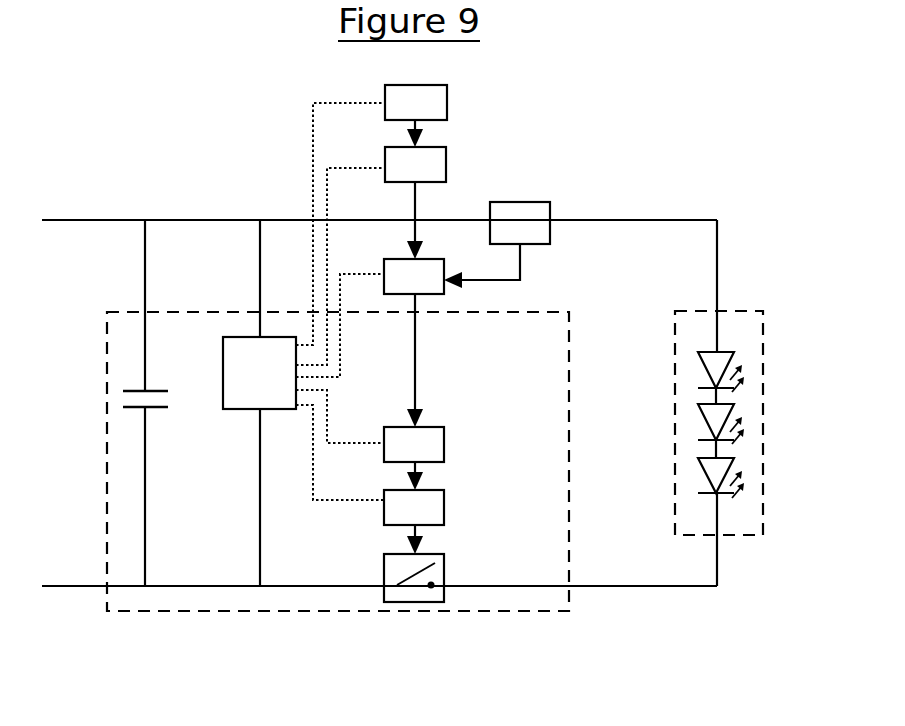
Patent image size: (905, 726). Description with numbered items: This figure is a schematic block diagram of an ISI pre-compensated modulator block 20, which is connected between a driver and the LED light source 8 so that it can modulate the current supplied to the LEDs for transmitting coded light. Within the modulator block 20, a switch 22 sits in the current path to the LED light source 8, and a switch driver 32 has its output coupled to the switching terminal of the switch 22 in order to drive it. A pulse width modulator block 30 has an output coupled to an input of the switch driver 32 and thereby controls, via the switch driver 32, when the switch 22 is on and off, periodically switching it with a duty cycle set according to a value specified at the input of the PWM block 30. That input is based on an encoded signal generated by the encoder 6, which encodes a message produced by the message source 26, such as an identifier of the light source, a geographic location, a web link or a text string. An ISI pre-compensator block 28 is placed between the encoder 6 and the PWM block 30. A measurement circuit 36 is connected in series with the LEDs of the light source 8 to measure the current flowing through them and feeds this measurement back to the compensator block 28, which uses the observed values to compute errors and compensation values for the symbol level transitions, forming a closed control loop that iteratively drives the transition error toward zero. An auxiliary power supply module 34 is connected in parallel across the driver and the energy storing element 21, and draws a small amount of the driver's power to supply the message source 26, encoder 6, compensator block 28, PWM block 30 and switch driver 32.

The encoder 6 is at (415, 164).
The LED light source 8 is at (740, 310).
The ISI pre-compensated modulator block 20 is at (177, 611).
The energy storing element 21 is at (157, 389).
The switch 22 is at (420, 602).
The message source 26 is at (416, 102).
The ISI pre-compensator block 28 is at (414, 276).
The pulse width modulator block 30 is at (414, 444).
The switch driver 32 is at (414, 507).
The auxiliary power supply module 34 is at (259, 373).
The measurement circuit 36 is at (520, 223).